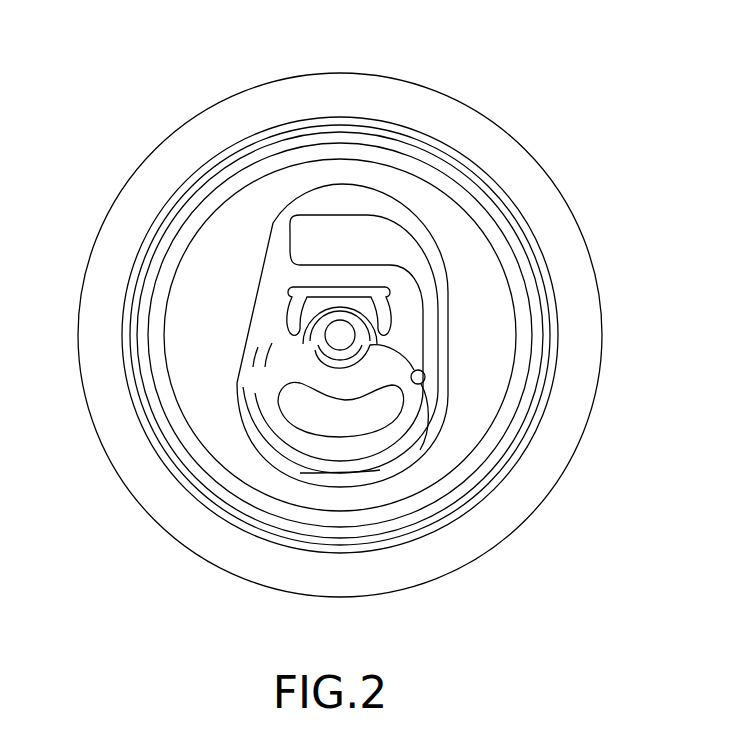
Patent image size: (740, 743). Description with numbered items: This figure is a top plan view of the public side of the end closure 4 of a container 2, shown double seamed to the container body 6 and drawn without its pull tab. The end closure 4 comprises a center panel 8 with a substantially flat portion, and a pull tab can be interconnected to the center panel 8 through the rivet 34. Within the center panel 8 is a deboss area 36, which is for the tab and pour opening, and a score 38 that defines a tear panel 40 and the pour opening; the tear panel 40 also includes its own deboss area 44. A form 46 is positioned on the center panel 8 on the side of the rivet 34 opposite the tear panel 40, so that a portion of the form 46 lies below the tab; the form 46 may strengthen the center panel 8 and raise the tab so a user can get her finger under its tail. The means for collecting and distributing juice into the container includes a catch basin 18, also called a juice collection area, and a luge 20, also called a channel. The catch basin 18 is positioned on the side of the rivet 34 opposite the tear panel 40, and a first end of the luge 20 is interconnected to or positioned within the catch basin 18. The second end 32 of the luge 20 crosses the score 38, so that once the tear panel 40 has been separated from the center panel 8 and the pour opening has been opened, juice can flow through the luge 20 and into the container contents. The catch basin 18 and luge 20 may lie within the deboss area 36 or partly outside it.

The container 2 is at (504, 54).
The end closure 4 is at (488, 272).
The container body 6 is at (508, 160).
The center panel 8 is at (460, 223).
The catch basin 18 is at (317, 233).
The luge 20 is at (433, 335).
The second end of the luge 32 is at (424, 376).
The rivet 34 is at (338, 331).
The deboss area 36 is at (265, 318).
The score 38 is at (430, 426).
The tear panel 40 is at (385, 445).
The deboss area 44 is at (330, 415).
The form 46 is at (307, 287).